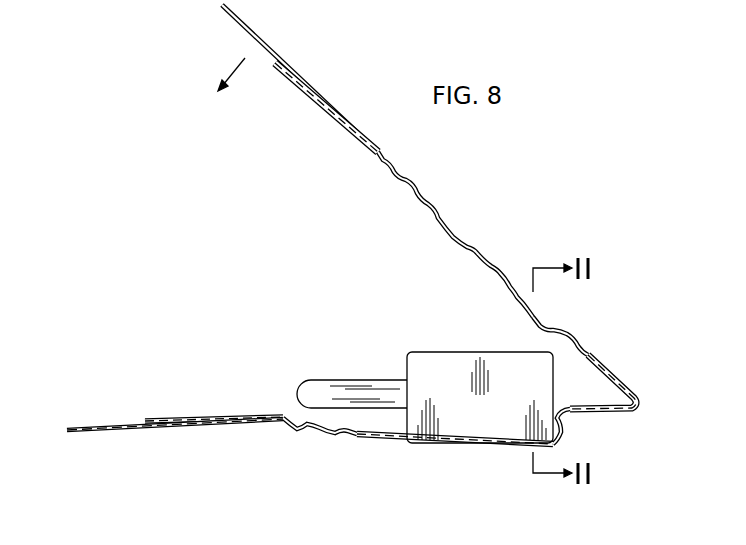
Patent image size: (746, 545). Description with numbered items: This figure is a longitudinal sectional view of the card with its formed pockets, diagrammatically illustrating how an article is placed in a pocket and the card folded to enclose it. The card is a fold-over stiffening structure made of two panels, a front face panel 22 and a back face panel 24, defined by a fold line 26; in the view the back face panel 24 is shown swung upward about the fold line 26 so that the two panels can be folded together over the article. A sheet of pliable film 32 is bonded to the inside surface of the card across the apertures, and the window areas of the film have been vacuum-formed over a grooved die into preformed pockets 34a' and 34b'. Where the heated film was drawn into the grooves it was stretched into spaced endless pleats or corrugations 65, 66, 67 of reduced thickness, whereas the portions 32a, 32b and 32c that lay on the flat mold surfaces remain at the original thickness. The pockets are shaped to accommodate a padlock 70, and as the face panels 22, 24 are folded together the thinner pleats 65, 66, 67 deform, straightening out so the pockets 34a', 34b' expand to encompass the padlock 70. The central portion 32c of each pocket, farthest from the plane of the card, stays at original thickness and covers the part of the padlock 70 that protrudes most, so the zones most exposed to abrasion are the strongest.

The front face panel 22 is at (120, 423).
The back face panel 24 is at (282, 61).
The fold line 26 is at (637, 404).
The sheet of pliable film 32 is at (313, 101).
The film portion of original thickness 32a is at (317, 434).
The film portion of original thickness 32b is at (363, 438).
The central portion of the film 32c is at (458, 446).
The preformed pocket 34a' is at (456, 429).
The preformed pocket 34b' is at (455, 234).
The pleat or corrugation 65 is at (303, 432).
The pleat or corrugation 66 is at (367, 440).
The pleat or corrugation 67 is at (340, 434).
The padlock 70 is at (472, 352).